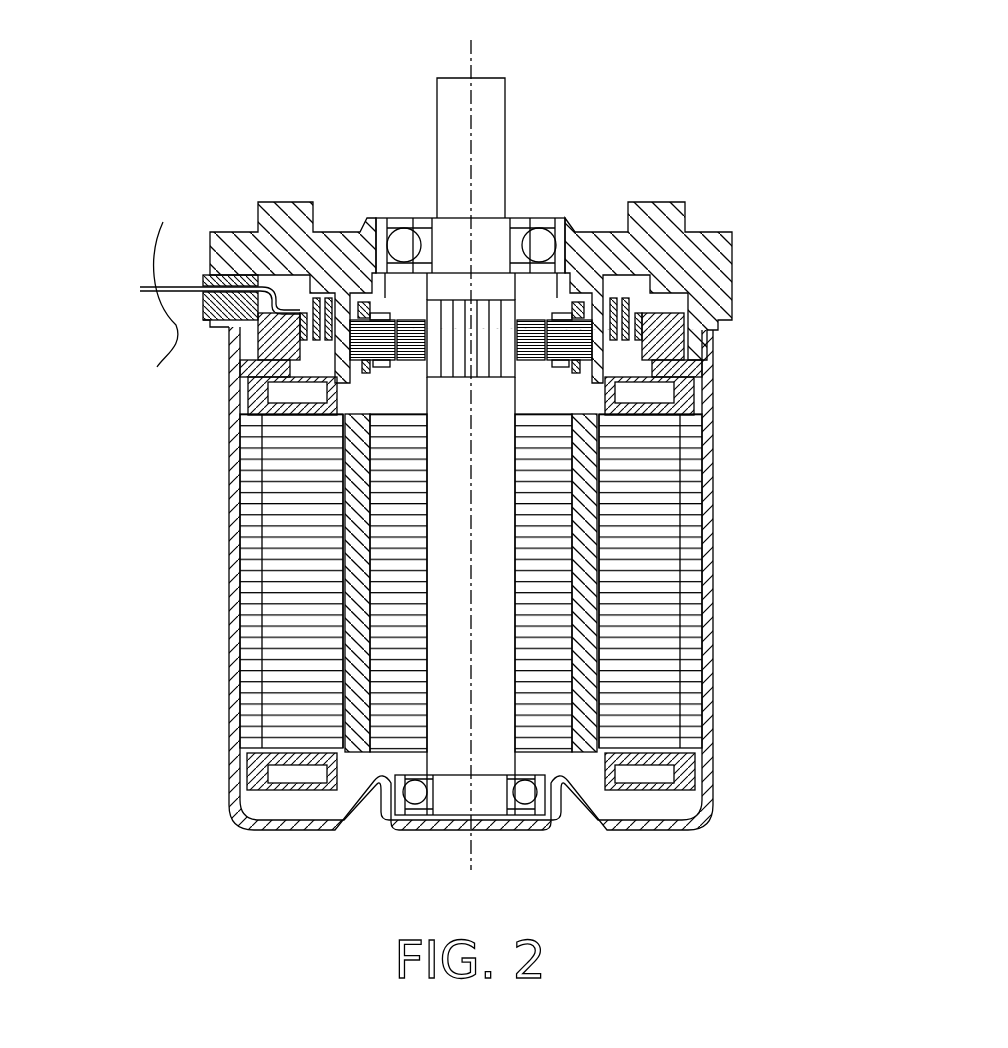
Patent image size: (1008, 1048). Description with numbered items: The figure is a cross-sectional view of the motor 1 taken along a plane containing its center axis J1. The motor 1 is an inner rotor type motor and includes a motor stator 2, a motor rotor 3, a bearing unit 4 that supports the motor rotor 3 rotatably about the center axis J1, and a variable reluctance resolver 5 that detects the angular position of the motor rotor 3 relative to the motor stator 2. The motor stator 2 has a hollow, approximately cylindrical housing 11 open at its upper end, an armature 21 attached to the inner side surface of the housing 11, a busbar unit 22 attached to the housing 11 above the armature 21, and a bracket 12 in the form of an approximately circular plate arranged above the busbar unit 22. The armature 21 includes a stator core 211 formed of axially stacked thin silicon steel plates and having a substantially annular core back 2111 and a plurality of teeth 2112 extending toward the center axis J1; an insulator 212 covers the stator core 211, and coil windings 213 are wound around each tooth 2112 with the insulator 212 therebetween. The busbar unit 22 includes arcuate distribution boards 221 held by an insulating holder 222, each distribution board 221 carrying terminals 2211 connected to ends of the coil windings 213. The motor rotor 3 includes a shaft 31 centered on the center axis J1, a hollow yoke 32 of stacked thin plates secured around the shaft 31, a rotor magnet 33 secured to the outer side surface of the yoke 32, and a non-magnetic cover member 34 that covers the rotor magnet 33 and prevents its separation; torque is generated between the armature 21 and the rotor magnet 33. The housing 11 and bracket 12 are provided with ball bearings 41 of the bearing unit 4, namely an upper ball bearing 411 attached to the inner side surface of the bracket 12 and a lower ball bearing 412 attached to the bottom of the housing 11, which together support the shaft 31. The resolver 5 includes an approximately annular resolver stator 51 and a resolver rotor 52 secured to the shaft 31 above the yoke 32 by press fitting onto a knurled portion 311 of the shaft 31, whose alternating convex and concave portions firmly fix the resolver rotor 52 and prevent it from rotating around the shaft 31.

The motor 1 is at (458, 460).
The housing 11 is at (712, 772).
The bracket 12 is at (242, 232).
The motor stator 2 is at (458, 544).
The armature 21 is at (362, 583).
The stator core 211 is at (384, 581).
The core back 2111 is at (250, 627).
The teeth 2112 is at (308, 673).
The insulator 212 is at (248, 776).
The coil windings 213 is at (290, 785).
The busbar unit 22 is at (567, 396).
The distribution boards 221 is at (670, 360).
The terminals 2211 is at (640, 350).
The holder 222 is at (640, 370).
The motor rotor 3 is at (609, 446).
The shaft 31 is at (492, 522).
The knurled portion 311 is at (492, 312).
The yoke 32 is at (555, 565).
The rotor magnet 33 is at (580, 600).
The cover member 34 is at (605, 640).
The bearing unit 4 is at (471, 460).
The ball bearings 41 is at (407, 185).
The upper ball bearing 411 is at (395, 240).
The lower ball bearing 412 is at (418, 800).
The variable reluctance resolver 5 is at (613, 274).
The resolver stator 51 is at (590, 330).
The resolver rotor 52 is at (533, 327).
The center axis J1 is at (478, 62).